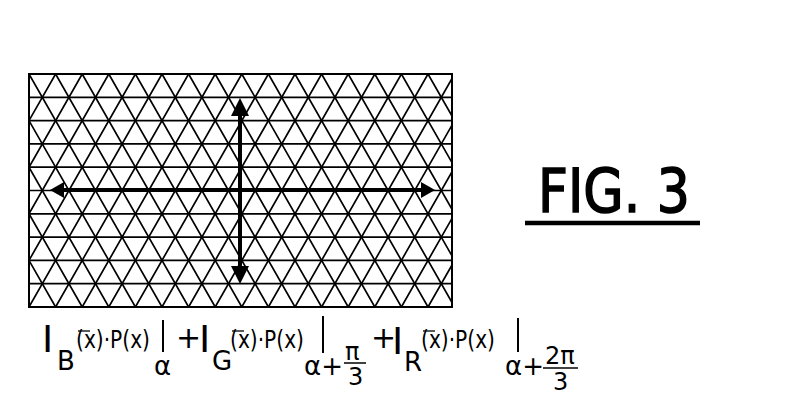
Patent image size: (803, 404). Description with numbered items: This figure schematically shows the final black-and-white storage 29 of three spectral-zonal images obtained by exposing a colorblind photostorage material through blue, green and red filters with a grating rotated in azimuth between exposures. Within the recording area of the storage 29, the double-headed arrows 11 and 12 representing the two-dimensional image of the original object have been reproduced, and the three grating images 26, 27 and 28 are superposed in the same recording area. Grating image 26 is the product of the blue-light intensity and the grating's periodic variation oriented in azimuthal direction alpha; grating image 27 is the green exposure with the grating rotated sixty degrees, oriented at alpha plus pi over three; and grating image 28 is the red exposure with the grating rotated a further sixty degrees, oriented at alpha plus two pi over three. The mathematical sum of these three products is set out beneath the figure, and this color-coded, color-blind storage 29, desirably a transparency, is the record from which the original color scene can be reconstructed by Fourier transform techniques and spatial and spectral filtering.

The double-headed arrow 11 is at (245, 135).
The double-headed arrow 12 is at (322, 122).
The grating image 26 is at (60, 97).
The grating image 27 is at (90, 88).
The grating image 28 is at (150, 82).
The final black-and-white storage 29 is at (452, 110).